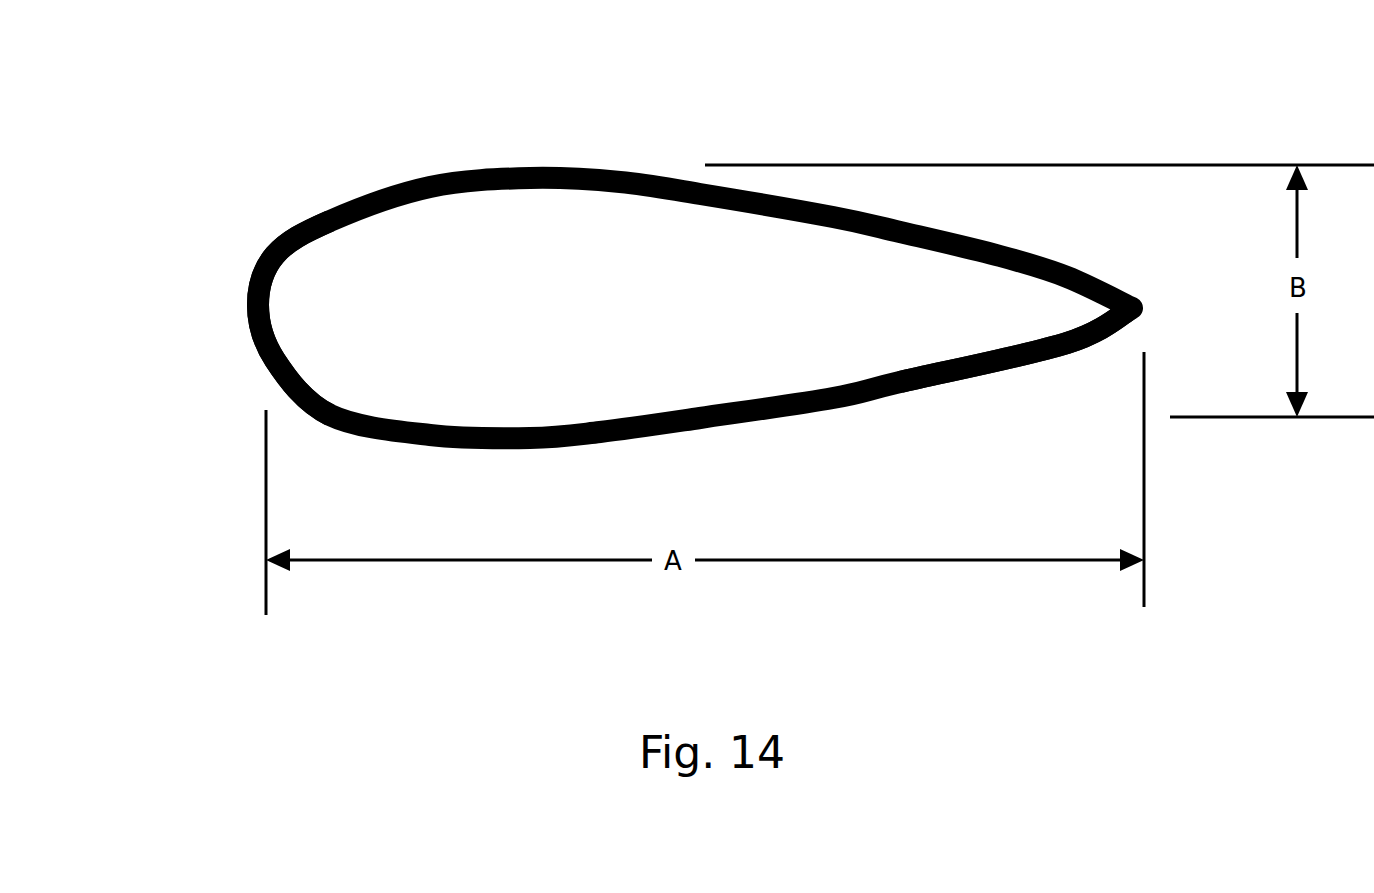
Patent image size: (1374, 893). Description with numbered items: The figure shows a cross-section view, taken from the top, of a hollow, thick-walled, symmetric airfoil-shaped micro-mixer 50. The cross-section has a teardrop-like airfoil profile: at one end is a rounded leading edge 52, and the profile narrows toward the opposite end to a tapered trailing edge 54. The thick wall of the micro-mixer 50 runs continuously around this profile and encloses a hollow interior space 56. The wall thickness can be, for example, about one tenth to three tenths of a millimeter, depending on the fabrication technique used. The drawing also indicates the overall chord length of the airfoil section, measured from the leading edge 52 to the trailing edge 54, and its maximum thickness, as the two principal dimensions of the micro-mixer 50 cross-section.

The micro-mixer 50 is at (280, 136).
The leading edge 52 is at (245, 332).
The trailing edge 54 is at (982, 390).
The hollow interior space 56 is at (583, 328).